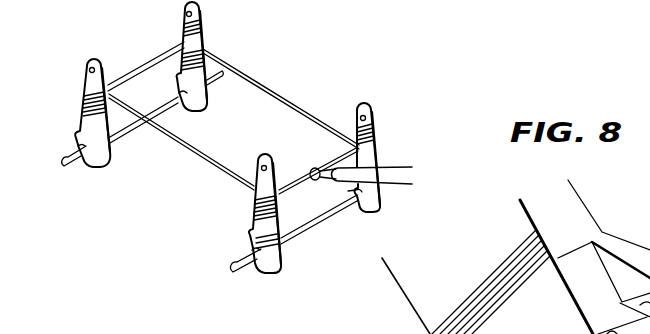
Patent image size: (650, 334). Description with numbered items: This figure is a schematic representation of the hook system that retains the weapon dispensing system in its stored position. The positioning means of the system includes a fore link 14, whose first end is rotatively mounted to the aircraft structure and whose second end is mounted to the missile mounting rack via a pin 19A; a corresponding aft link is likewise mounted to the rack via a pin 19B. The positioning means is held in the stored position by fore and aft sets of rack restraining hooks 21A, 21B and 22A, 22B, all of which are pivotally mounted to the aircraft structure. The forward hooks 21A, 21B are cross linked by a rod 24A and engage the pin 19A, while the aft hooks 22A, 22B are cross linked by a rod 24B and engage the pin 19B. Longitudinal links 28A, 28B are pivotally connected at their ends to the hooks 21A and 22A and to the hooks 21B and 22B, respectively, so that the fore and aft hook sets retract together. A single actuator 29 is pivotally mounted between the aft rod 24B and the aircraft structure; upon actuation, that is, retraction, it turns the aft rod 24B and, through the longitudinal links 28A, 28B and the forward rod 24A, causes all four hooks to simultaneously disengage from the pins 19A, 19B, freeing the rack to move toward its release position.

The pin 19A is at (65, 170).
The pin 19B is at (235, 269).
The rack restraining hook 21A is at (107, 170).
The rack restraining hook 21B is at (205, 41).
The rack restraining hook 22A is at (281, 268).
The rack restraining hook 22B is at (352, 112).
The rod 24A is at (143, 70).
The aft rod 24B is at (296, 176).
The longitudinal link 28A is at (202, 158).
The longitudinal link 28B is at (287, 100).
The actuator 29 is at (394, 166).
The fore link 14 is at (593, 220).